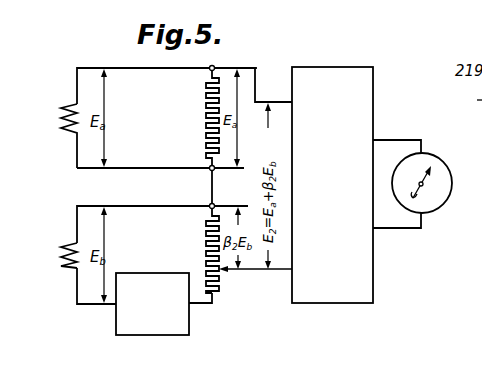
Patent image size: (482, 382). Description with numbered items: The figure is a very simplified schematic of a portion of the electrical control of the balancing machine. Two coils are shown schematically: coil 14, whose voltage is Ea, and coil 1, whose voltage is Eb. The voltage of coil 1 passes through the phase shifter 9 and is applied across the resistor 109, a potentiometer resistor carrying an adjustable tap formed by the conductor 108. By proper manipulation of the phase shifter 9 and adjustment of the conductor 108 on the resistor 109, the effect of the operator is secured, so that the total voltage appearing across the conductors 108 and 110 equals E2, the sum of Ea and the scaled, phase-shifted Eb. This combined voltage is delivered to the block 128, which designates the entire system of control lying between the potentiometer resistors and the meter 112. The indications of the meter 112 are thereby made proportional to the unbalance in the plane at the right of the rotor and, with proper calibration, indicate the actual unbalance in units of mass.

The coil 14 is at (63, 106).
The coil 1 is at (62, 256).
The resistor 109 is at (207, 247).
The conductor 110 is at (257, 67).
The conductor 108 is at (240, 272).
The system of control 128 is at (346, 147).
The meter 112 is at (438, 208).
The phase shifter 9 is at (189, 334).